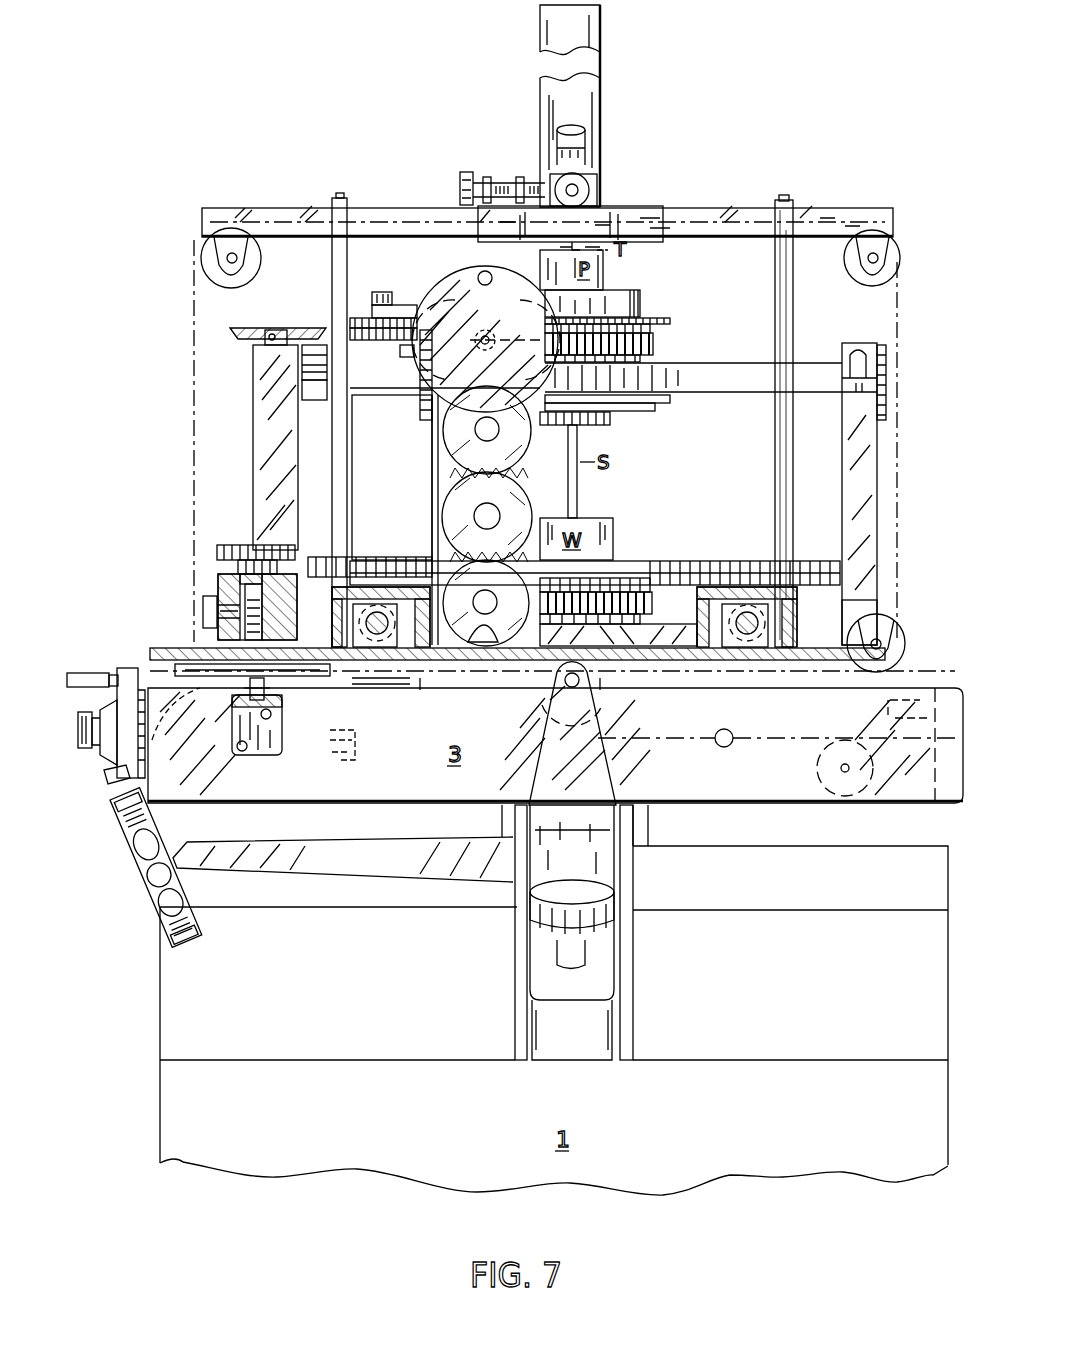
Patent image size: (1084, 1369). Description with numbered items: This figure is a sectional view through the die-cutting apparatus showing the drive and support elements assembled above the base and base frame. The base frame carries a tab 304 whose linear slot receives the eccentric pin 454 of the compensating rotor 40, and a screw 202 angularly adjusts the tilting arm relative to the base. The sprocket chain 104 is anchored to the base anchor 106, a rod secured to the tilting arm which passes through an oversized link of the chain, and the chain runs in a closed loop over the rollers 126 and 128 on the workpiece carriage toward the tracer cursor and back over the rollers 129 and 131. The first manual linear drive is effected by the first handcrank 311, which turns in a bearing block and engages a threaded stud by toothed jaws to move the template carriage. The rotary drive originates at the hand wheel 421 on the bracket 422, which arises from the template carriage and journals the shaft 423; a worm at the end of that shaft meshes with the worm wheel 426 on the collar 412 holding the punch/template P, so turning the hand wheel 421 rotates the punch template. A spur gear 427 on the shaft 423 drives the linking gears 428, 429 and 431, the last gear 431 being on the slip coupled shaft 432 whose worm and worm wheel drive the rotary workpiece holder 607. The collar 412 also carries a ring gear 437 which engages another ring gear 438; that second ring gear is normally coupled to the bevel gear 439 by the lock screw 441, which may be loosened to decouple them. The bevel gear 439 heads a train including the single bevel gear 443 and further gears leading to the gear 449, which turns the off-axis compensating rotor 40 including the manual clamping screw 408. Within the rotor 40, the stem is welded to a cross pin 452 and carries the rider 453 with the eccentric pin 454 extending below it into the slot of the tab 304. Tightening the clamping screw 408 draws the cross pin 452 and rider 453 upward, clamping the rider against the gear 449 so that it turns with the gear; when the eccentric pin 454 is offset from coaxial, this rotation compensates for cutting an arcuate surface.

The compensating rotor 40 is at (206, 586).
The chain 104 is at (191, 421).
The base anchor 106 is at (730, 730).
The roller 126 is at (812, 778).
The roller 128 is at (208, 262).
The roller 129 is at (893, 262).
The roller 131 is at (893, 640).
The screw 202 is at (530, 932).
The tab 304 is at (268, 712).
The first handcrank 311 is at (128, 668).
The clamping screw 408 is at (236, 545).
The collar 412 is at (640, 305).
The hand wheel 421 is at (460, 280).
The bracket 422 is at (432, 408).
The shaft 423 is at (520, 340).
The worm wheel 426 is at (654, 345).
The spur gear 427 is at (452, 306).
The linking gear 428 is at (470, 442).
The linking gear 429 is at (462, 500).
The linking gear 431 is at (462, 575).
The slip coupled shaft 432 is at (485, 620).
The ring gear 437 is at (668, 325).
The gear unit 438 is at (358, 322).
The bevel gear 439 is at (396, 375).
The lock screw 441 is at (390, 296).
The single bevel gear 443 is at (260, 330).
The gear 449 is at (152, 655).
The cross pin 452 is at (225, 690).
The rider 453 is at (282, 694).
The eccentric pin 454 is at (300, 750).
The workpiece holder 607 is at (696, 565).